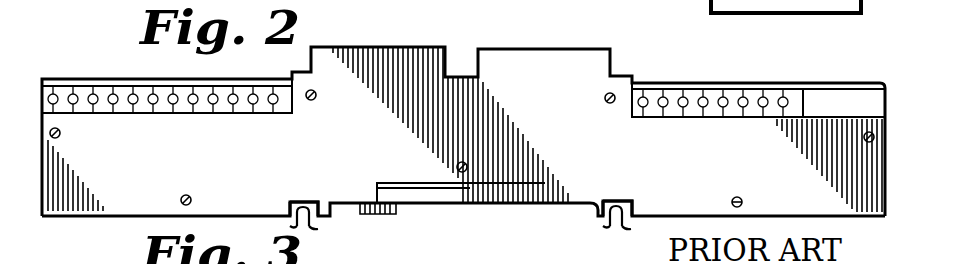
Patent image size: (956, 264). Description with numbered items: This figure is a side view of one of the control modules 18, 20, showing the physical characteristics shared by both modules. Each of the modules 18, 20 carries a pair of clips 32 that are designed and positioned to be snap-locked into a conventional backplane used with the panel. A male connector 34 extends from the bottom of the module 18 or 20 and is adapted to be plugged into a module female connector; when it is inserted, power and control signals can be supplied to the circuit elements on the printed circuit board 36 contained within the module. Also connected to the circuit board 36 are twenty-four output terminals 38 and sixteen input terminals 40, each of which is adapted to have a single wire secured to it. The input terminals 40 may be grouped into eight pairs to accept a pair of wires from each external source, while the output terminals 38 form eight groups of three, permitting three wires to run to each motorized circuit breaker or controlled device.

The control module 18 is at (758, 80).
The control module 20 is at (778, 88).
The clips 32 is at (319, 227).
The male connector 34 is at (394, 214).
The printed circuit board 36 is at (842, 105).
The output terminals 38 is at (133, 83).
The input terminals 40 is at (690, 91).